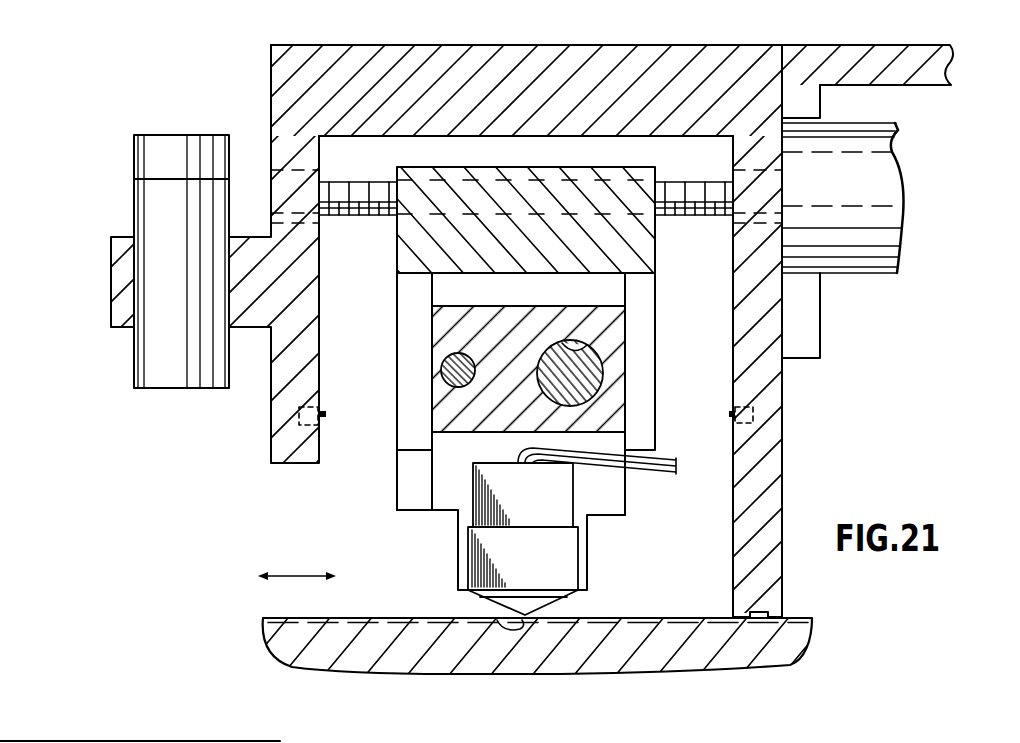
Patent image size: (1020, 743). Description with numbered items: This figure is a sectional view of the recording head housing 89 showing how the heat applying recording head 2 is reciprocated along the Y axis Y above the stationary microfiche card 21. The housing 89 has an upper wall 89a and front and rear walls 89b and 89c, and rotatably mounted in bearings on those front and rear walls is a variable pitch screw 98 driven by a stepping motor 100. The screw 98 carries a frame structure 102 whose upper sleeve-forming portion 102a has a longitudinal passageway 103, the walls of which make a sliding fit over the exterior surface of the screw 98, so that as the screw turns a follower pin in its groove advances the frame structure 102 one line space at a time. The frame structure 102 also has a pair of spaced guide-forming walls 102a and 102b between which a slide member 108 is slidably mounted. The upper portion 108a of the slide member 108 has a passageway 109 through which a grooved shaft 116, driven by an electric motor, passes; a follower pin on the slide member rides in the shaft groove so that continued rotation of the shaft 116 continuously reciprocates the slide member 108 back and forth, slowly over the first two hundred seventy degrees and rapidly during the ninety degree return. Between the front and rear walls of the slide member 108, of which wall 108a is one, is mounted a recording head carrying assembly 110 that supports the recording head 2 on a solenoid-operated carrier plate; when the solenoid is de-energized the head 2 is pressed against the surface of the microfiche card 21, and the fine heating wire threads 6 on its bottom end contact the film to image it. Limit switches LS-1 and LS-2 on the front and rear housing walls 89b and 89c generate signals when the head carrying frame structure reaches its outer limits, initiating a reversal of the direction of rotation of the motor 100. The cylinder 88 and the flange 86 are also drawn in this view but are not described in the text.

The recording head housing 89 is at (510, 310).
The upper wall 89a is at (577, 58).
The front wall 89b is at (287, 153).
The rear wall 89c is at (773, 388).
The drive cylinder 88 is at (170, 153).
The mounting flange 86 is at (173, 395).
The stepping motor 100 is at (877, 255).
The screw 98 is at (700, 190).
The frame structure 102 is at (527, 326).
The upper sleeve-forming portion 102a is at (553, 162).
The guide-forming wall 102b is at (395, 353).
The longitudinal passageway 103 is at (455, 183).
The slide member 108 is at (565, 362).
The upper portion of slide member 108a is at (482, 305).
The passageway 109 is at (580, 345).
The grooved shaft 116 is at (594, 372).
The recording head carrying assembly 110 is at (458, 543).
The recording head 2 is at (512, 570).
The heating wire threads 6 is at (500, 620).
The microfiche card 21 is at (686, 655).
The limit switch LS-1 is at (327, 416).
The limit switch LS-2 is at (729, 413).
The Y axis Y is at (297, 592).